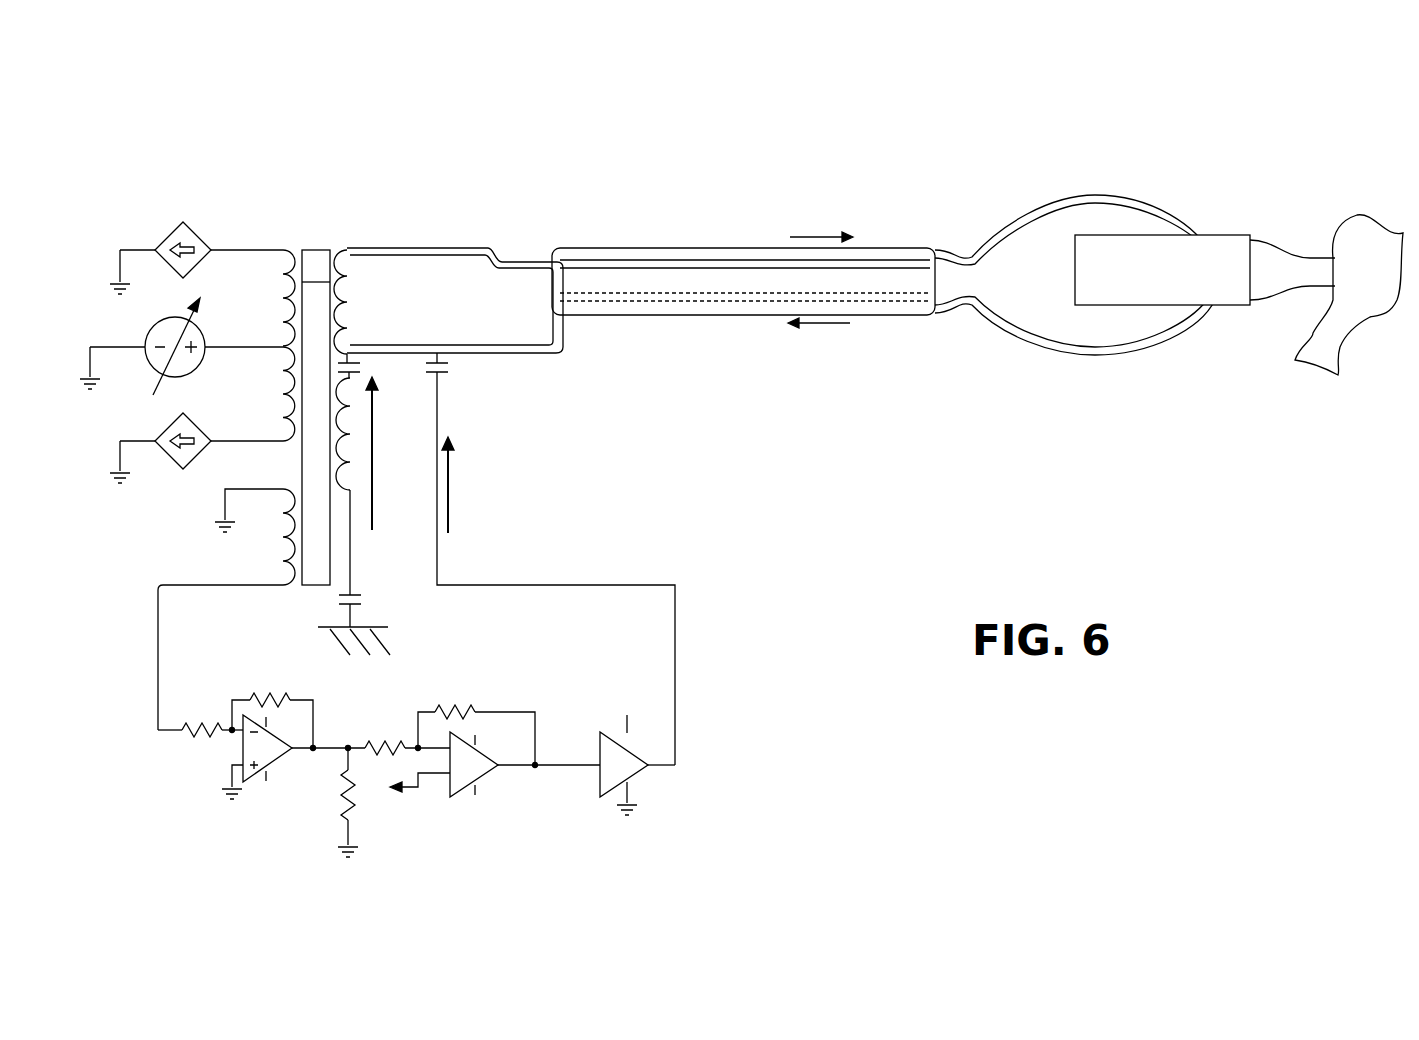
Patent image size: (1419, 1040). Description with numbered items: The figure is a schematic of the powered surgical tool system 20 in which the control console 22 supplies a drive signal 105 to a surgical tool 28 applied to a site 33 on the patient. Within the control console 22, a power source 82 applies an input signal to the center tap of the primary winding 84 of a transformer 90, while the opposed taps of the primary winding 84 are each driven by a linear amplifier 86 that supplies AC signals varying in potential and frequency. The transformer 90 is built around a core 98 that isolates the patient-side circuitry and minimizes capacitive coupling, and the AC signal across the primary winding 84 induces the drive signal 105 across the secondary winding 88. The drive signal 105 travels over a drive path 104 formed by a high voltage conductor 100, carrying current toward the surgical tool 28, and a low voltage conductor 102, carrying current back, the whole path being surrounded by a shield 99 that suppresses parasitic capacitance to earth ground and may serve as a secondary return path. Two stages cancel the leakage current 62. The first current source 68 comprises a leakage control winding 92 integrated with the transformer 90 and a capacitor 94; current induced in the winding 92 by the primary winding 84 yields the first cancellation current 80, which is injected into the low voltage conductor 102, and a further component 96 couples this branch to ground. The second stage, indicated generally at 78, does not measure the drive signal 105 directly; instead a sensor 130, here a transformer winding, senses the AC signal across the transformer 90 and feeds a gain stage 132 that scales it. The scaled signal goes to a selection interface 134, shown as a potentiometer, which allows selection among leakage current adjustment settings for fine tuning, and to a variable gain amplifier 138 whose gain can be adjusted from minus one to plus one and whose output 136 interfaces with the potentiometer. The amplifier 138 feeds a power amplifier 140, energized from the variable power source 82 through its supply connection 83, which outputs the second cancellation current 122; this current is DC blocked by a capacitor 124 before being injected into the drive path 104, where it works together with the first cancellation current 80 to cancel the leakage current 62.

The powered surgical tool system 20 is at (1169, 245).
The control console 22 is at (187, 337).
The surgical tool 28 is at (1222, 308).
The site 33 is at (1375, 245).
The leakage current 62 is at (815, 343).
The first current source 68 is at (318, 605).
The signal processing circuit 78 is at (486, 772).
The first cancellation current 80 is at (380, 440).
The power source 82 is at (148, 372).
The output amplifier supply lead 83 is at (625, 733).
The primary winding 84 is at (280, 318).
The linear amplifier 86 is at (198, 233).
The secondary winding 88 is at (340, 252).
The transformer 90 is at (292, 380).
The leakage control winding 92 is at (346, 485).
The capacitor 94 is at (365, 365).
The capacitor 96 is at (345, 633).
The core 98 is at (316, 417).
The shield 99 is at (618, 248).
The high voltage conductor 100 is at (455, 262).
The low voltage conductor 102 is at (465, 345).
The drive path 104 is at (428, 345).
The drive signal 105 is at (810, 237).
The second cancellation current 122 is at (455, 490).
The capacitor 124 is at (445, 375).
The sensor 130 is at (280, 548).
The gain stage 132 is at (258, 795).
The selection interface 134 is at (342, 815).
The output 136 is at (400, 795).
The variable gain amplifier 138 is at (482, 792).
The power amplifier 140 is at (625, 772).